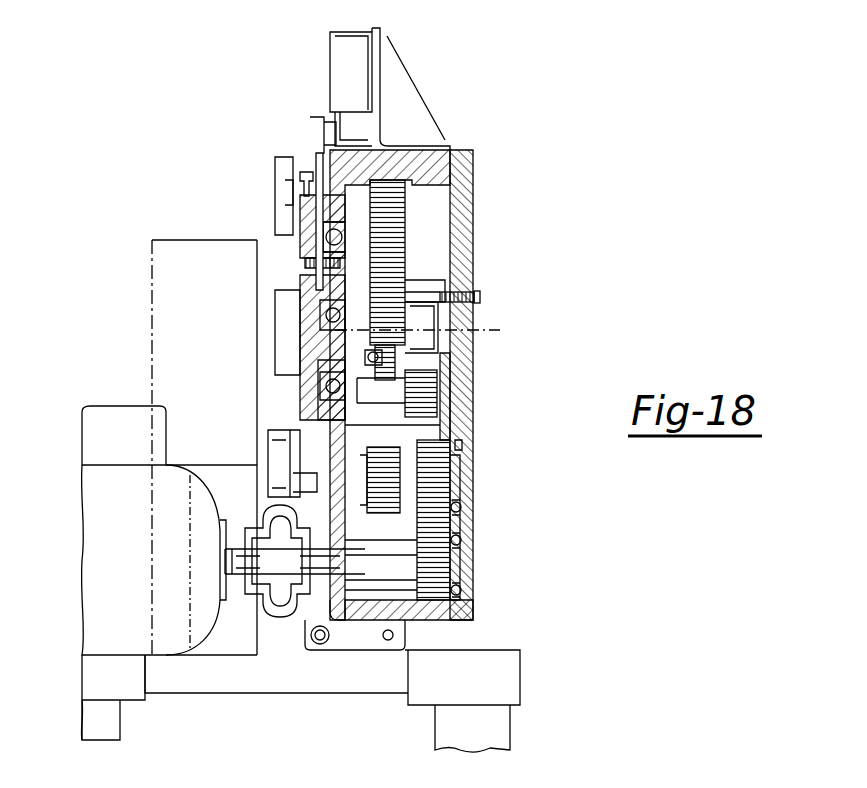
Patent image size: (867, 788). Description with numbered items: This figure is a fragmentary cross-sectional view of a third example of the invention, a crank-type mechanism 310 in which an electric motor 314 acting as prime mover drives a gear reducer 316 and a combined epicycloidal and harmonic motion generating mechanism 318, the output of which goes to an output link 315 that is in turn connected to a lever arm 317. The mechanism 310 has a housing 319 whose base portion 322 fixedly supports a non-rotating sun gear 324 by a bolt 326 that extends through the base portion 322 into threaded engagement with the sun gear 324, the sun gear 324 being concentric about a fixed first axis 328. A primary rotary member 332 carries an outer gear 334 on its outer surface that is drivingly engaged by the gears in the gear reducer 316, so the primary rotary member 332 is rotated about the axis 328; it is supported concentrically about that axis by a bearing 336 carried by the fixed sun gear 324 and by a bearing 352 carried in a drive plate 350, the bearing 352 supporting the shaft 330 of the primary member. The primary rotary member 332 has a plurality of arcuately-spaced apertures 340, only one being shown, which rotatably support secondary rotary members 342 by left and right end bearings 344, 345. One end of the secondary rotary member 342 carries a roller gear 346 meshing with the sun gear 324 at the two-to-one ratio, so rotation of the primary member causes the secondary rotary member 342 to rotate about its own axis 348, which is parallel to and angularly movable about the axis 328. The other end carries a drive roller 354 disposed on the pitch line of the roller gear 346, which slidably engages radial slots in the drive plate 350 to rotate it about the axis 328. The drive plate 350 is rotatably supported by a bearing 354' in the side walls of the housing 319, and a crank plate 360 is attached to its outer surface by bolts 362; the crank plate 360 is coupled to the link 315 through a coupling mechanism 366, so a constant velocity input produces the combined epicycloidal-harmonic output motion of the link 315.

The crank-type mechanism 310 is at (514, 110).
The electric motor 314 is at (216, 657).
The output link 315 is at (260, 430).
The gear reducer 316 is at (452, 522).
The lever arm 317 is at (172, 240).
The combined epicycloidal and harmonic motion generating mechanism 318 is at (482, 185).
The housing 319 is at (476, 428).
The base portion 322 is at (476, 502).
The sun gear 324 is at (455, 300).
The bolt 326 is at (478, 300).
The first axis 328 is at (488, 328).
The shaft 330 is at (297, 318).
The primary rotary member 332 is at (468, 160).
The outer gear 334 is at (385, 182).
The bearing 336 is at (418, 290).
The apertures 340 is at (476, 455).
The secondary rotary member 342 is at (312, 368).
The left end bearing 344 is at (310, 412).
The right end bearing 345 is at (476, 427).
The roller gear 346 is at (476, 347).
The axis 348 is at (500, 395).
The drive plate 350 is at (330, 185).
The bearing 352 is at (300, 273).
The drive roller 354 is at (266, 390).
The bearing 354' is at (245, 187).
The crank plate 360 is at (300, 257).
The bolts 362 is at (298, 262).
The coupling mechanism 366 is at (284, 470).